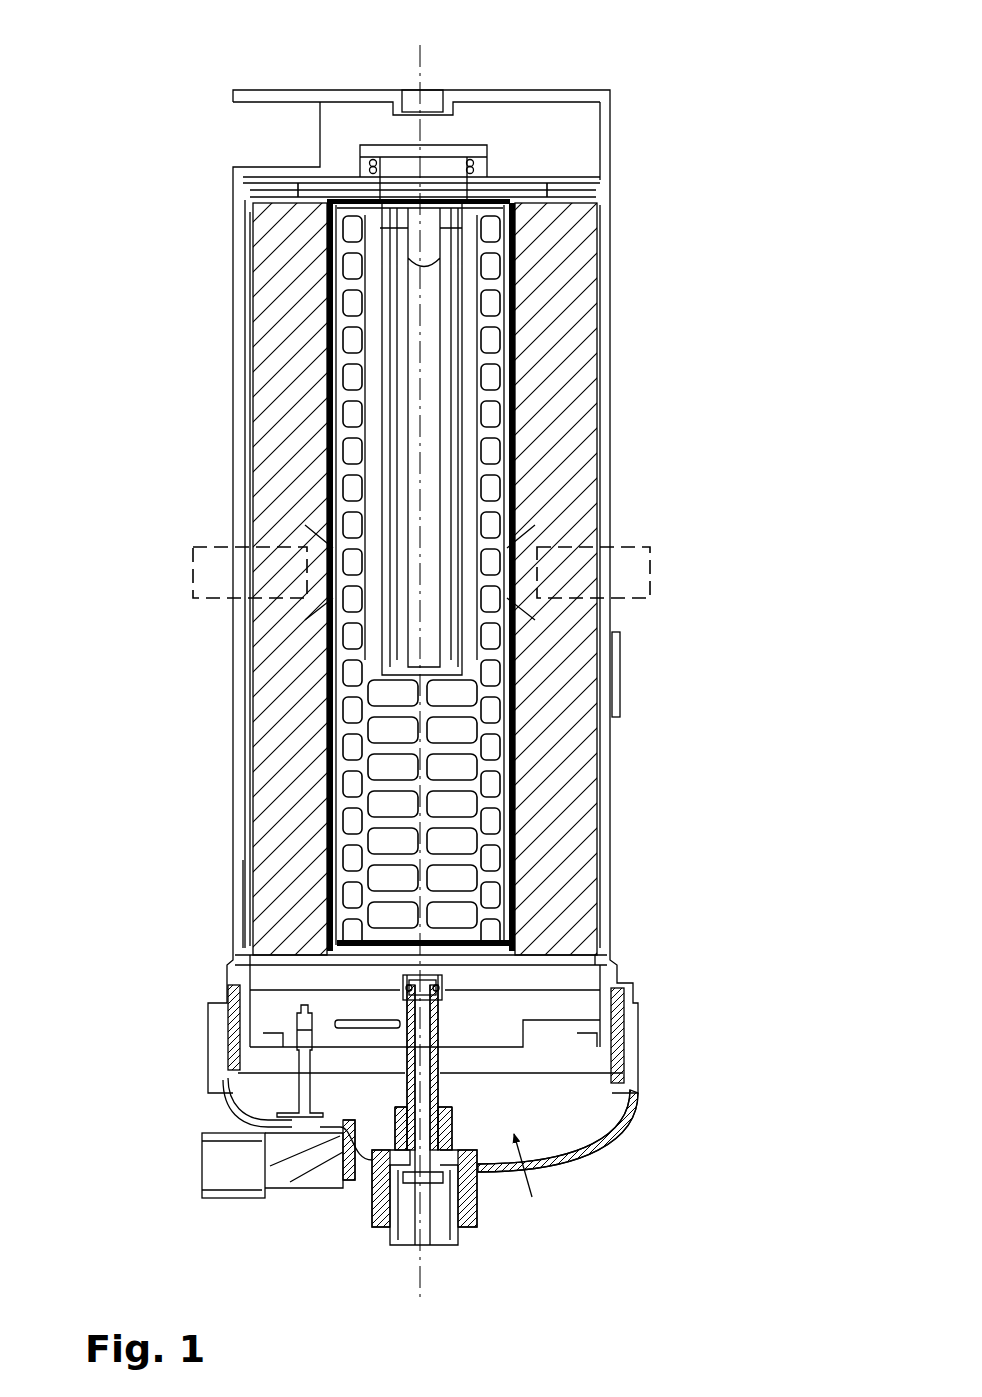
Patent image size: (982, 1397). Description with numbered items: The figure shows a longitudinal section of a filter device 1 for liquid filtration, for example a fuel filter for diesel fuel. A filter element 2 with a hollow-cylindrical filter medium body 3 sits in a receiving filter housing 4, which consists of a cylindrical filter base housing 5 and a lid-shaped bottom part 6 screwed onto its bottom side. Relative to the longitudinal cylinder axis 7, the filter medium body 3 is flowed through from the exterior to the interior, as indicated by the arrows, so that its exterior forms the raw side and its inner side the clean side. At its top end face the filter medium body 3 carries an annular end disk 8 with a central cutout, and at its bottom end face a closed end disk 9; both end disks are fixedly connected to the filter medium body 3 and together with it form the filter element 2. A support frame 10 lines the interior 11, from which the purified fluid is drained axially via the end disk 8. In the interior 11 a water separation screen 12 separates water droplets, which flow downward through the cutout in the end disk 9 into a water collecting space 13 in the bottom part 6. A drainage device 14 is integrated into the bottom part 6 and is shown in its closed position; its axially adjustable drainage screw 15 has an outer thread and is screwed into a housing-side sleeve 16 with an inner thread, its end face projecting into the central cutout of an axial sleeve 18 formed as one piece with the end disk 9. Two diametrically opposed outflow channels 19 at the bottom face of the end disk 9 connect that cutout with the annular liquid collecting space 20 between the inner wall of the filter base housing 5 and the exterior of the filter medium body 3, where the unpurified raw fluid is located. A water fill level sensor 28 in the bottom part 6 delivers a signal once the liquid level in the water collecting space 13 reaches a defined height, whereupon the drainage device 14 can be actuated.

The filter device 1 is at (136, 74).
The filter element 2 is at (275, 355).
The filter medium body 3 is at (268, 432).
The filter housing 4 is at (614, 322).
The filter base housing 5 is at (606, 415).
The bottom part 6 is at (578, 1136).
The longitudinal cylinder axis 7 is at (421, 73).
The annular end disk 8 is at (571, 194).
The closed end disk 9 is at (527, 972).
The support frame 10 is at (481, 790).
The interior 11 is at (481, 828).
The water separation screen 12 is at (498, 487).
The water collecting space 13 is at (541, 1188).
The drainage device 14 is at (378, 1232).
The drainage screw 15 is at (440, 1081).
The sleeve 16 is at (477, 1188).
The axial sleeve 18 is at (442, 1000).
The outflow channel 19 is at (283, 982).
The liquid collecting space 20 is at (257, 886).
The water fill level sensor 28 is at (312, 1093).